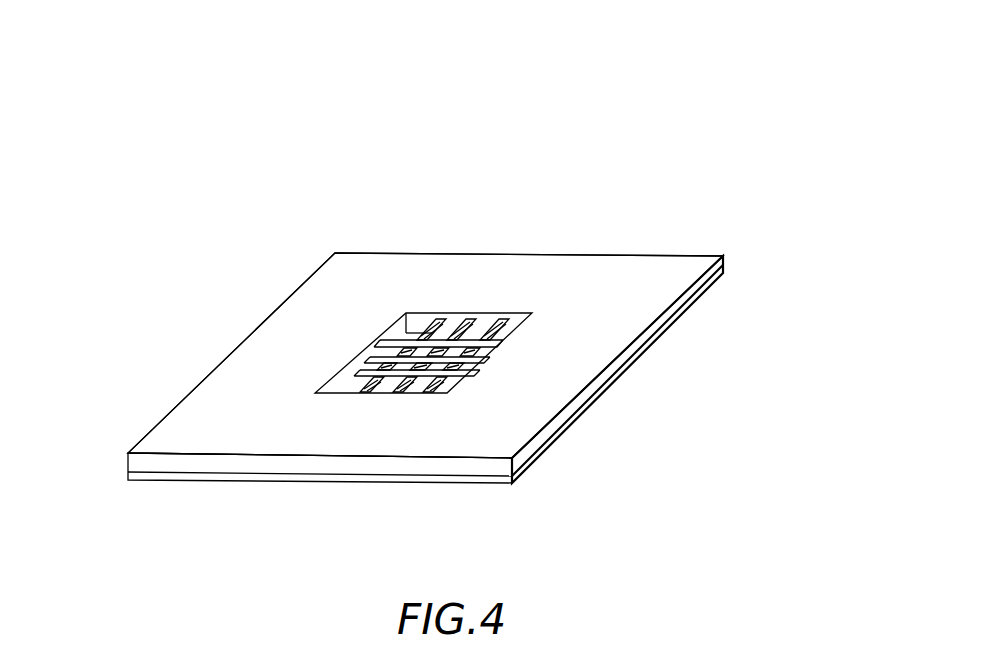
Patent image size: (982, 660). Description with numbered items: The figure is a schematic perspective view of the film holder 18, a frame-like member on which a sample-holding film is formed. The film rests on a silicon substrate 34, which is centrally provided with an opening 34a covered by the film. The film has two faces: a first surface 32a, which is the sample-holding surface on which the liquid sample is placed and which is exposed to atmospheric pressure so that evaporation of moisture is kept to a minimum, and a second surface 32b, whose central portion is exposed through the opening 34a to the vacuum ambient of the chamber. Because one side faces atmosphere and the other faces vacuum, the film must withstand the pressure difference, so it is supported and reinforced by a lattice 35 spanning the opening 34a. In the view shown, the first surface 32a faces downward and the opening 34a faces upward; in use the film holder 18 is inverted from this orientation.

The film holder 18 is at (435, 342).
The first surface 32a is at (142, 480).
The second surface 32b is at (517, 317).
The silicon substrate 34 is at (375, 272).
The opening 34a is at (477, 316).
The lattice 35 is at (444, 216).